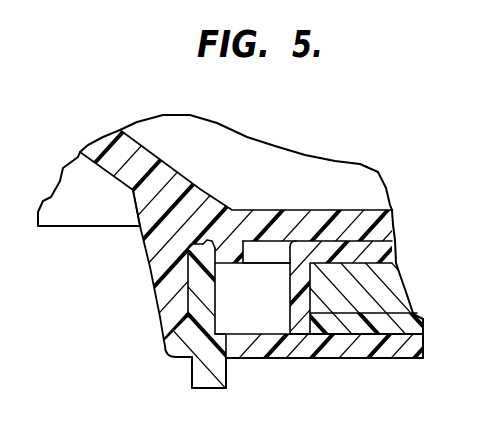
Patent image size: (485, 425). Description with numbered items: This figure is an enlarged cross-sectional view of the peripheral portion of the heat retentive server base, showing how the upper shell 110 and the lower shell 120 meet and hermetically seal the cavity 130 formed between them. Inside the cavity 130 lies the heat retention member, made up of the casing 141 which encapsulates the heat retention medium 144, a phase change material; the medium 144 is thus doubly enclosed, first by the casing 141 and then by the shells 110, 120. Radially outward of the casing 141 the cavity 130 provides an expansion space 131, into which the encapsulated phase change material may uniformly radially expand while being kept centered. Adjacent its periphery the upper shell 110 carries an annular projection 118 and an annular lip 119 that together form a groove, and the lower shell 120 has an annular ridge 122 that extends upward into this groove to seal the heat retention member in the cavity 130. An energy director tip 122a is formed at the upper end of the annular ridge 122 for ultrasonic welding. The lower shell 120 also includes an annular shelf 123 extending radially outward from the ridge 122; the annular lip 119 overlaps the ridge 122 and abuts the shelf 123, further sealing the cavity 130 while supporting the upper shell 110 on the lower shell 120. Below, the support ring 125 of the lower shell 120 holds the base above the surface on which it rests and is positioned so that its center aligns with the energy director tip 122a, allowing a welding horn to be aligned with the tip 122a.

The upper shell 110 is at (384, 203).
The annular projection 118 is at (248, 247).
The annular lip 119 is at (155, 270).
The lower shell 120 is at (406, 363).
The annular ridge 122 is at (203, 297).
The energy director tip 122a is at (210, 252).
The annular shelf 123 is at (163, 345).
The support ring 125 is at (192, 378).
The cavity 130 is at (282, 320).
The expansion space 131 is at (240, 322).
The casing 141 is at (383, 250).
The heat retention medium 144 is at (395, 290).